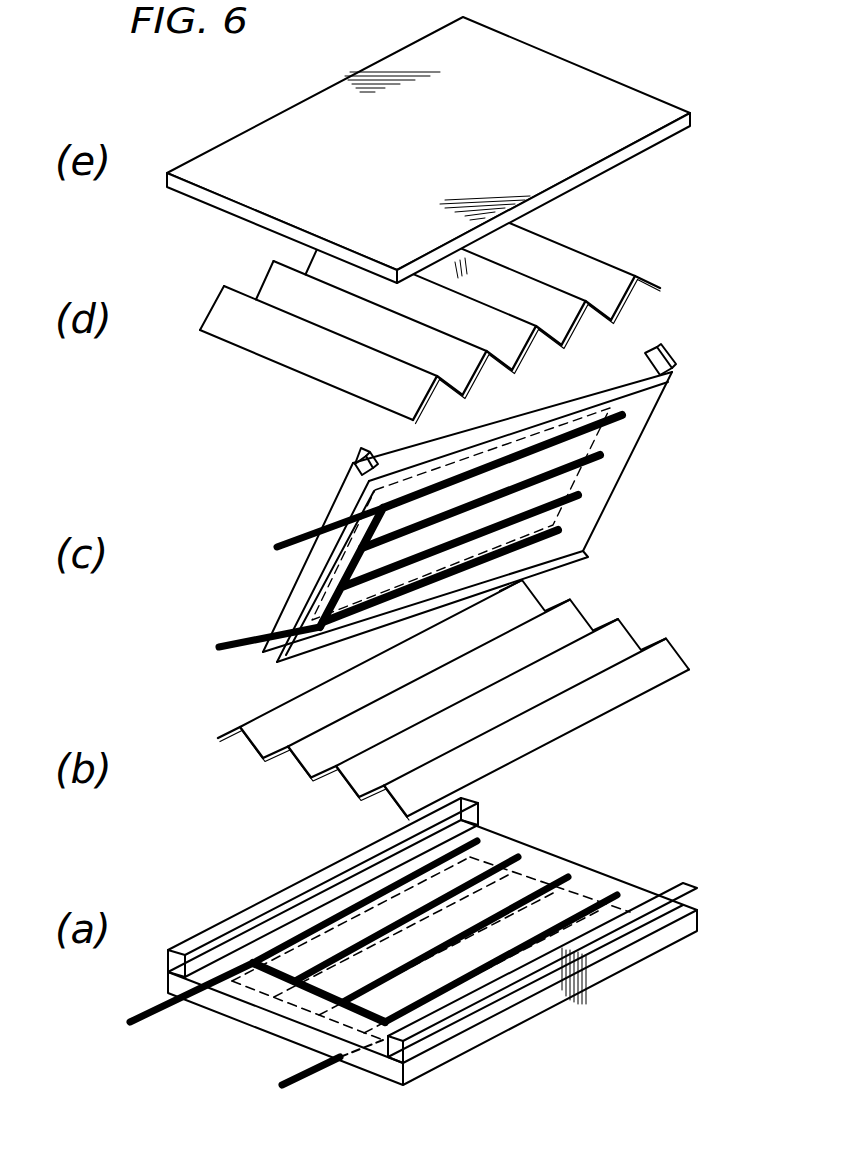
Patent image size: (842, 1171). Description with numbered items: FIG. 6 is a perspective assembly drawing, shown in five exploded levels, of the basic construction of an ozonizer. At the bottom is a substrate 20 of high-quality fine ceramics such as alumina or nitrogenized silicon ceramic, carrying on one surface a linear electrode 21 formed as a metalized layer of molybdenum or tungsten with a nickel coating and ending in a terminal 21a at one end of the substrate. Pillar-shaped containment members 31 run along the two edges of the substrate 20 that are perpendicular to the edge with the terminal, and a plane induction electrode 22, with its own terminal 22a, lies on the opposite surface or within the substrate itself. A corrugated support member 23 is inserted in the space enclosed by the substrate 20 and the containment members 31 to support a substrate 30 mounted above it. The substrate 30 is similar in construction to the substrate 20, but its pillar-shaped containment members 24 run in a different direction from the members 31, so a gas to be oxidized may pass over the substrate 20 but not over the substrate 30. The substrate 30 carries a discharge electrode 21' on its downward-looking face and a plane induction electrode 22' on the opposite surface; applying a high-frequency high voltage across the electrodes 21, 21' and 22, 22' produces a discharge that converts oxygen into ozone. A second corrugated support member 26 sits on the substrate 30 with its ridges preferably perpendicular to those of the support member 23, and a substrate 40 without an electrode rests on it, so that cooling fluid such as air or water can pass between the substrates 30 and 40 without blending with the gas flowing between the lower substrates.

The substrate 20 is at (600, 868).
The linear electrode 21 is at (435, 911).
The linear electrode 21' is at (502, 521).
The terminal 21a is at (290, 545).
The plane induction electrode 22 is at (421, 959).
The plane induction electrode 22' is at (476, 515).
The terminal 22a is at (233, 640).
The corrugated support member 23 is at (665, 637).
The pillar-shaped containment members 24 is at (362, 458).
The corrugated support member 26 is at (615, 268).
The substrate 30 is at (660, 418).
The pillar-shaped containment members 31 is at (478, 807).
The substrate 40 is at (292, 120).